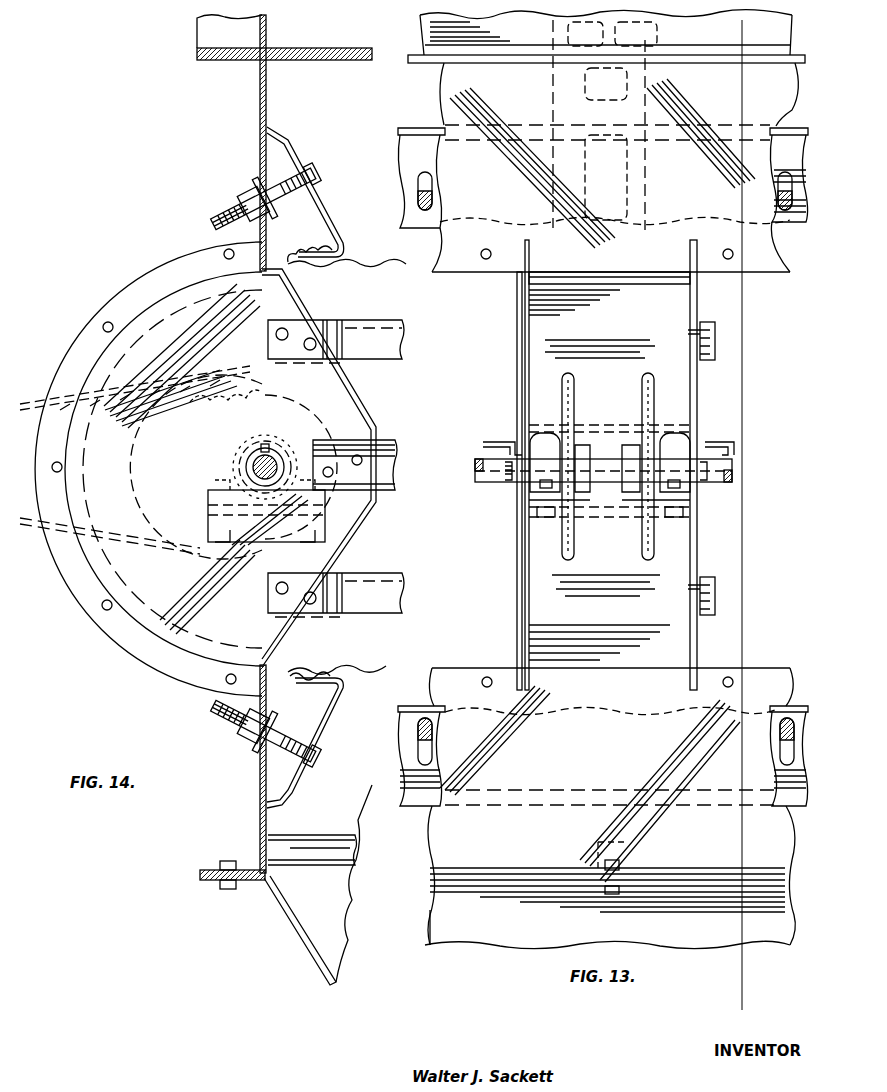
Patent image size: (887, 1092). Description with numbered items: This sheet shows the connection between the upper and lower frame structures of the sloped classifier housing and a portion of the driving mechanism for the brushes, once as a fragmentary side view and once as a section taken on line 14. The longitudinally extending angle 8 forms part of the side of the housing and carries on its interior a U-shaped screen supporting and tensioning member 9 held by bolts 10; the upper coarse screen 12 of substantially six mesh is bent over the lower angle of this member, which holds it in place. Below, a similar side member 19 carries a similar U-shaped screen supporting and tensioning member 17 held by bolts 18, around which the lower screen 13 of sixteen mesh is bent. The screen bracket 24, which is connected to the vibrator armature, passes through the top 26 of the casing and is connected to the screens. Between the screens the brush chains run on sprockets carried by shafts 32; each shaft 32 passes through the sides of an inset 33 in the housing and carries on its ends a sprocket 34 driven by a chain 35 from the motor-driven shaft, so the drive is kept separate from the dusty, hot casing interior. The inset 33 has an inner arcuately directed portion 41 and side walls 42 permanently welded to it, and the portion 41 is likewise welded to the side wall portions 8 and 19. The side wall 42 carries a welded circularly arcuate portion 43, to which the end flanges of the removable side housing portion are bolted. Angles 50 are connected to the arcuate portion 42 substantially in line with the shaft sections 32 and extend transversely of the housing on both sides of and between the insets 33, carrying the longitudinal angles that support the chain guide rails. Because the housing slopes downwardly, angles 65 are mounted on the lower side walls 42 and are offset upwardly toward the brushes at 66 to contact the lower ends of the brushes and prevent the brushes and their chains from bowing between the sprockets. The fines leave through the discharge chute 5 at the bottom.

In FIG. 14, the discharge chute 5 is at (296, 934).
In FIG. 13, the discharge chute 5 is at (500, 920).
In FIG. 14, the longitudinally extending angle 8 is at (262, 100).
In FIG. 13, the longitudinally extending angle 8 is at (505, 258).
In FIG. 14, the U-shaped screen supporting and tensioning member 9 is at (322, 207).
In FIG. 13, the U-shaped screen supporting and tensioning member 9 is at (410, 112).
In FIG. 14, the bolt 10 is at (320, 170).
In FIG. 13, the bolt 10 is at (432, 198).
In FIG. 14, the upper coarse screen 12 is at (372, 268).
In FIG. 14, the lower screen 13 is at (372, 668).
In FIG. 13, the section line 14 is at (750, 989).
In FIG. 14, the U-shaped screen supporting and tensioning member 17 is at (334, 718).
In FIG. 13, the U-shaped screen supporting and tensioning member 17 is at (440, 690).
In FIG. 14, the bolt 18 is at (320, 755).
In FIG. 13, the bolt 18 is at (432, 748).
In FIG. 14, the side member 19 is at (258, 822).
In FIG. 13, the side member 19 is at (458, 836).
In FIG. 13, the screen bracket 24 is at (565, 98).
In FIG. 14, the top of the casing 26 is at (318, 52).
In FIG. 14, the shaft 32 is at (272, 458).
In FIG. 13, the shaft 32 is at (500, 478).
In FIG. 14, the inset 33 is at (380, 500).
In FIG. 13, the inset 33 is at (609, 435).
In FIG. 14, the sprocket 34 is at (188, 416).
In FIG. 13, the sprocket 34 is at (572, 560).
In FIG. 14, the chain 35 is at (200, 380).
In FIG. 14, the inner arcuately directed portion 41 is at (376, 400).
In FIG. 13, the inner arcuately directed portion 41 is at (600, 328).
In FIG. 14, the side wall 42 is at (172, 466).
In FIG. 13, the side wall 42 is at (700, 530).
In FIG. 14, the circularly arcuate portion 43 is at (190, 262).
In FIG. 13, the circularly arcuate portion 43 is at (530, 258).
In FIG. 14, the angle 50 is at (392, 444).
In FIG. 13, the angle 50 is at (500, 442).
In FIG. 14, the angle 65 is at (388, 346).
In FIG. 13, the angle 65 is at (715, 332).
In FIG. 14, the upward offset 66 is at (332, 332).
In FIG. 13, the upward offset 66 is at (715, 350).